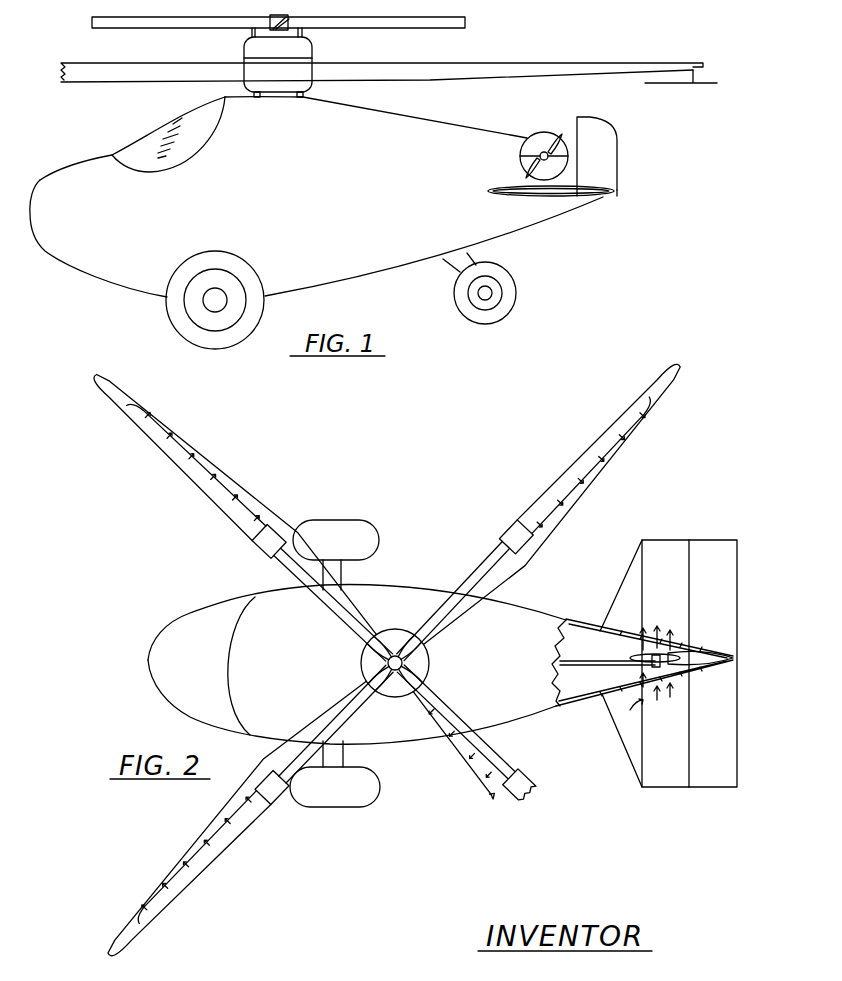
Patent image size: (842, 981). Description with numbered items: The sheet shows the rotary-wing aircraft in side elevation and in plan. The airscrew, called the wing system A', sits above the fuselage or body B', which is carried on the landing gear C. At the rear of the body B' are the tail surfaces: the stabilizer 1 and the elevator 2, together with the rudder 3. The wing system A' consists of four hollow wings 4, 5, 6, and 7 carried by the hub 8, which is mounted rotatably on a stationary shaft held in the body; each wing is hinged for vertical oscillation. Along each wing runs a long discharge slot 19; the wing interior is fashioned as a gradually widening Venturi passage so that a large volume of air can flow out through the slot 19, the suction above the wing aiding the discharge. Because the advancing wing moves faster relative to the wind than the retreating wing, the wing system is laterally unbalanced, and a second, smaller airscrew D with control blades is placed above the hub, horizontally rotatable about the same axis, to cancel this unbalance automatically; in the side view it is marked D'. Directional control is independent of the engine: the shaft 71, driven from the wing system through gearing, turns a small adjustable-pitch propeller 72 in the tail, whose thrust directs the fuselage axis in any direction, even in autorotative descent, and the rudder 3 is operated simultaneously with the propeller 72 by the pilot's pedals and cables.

In FIG. 1, the stabilizer 1 is at (545, 194).
In FIG. 2, the stabilizer 1 is at (663, 787).
In FIG. 1, the elevator 2 is at (587, 194).
In FIG. 2, the elevator 2 is at (718, 787).
In FIG. 1, the rudder 3 is at (605, 162).
In FIG. 2, the rudder 3 is at (712, 657).
In FIG. 2, the wing 4 is at (389, 652).
In FIG. 2, the wing 5 is at (237, 488).
In FIG. 1, the wing 6 is at (694, 76).
In FIG. 2, the wing 6 is at (183, 888).
In FIG. 2, the wing 7 is at (513, 763).
In FIG. 1, the hub 8 is at (303, 53).
In FIG. 2, the hub 8 is at (430, 661).
In FIG. 2, the discharge slot 19 is at (220, 835).
In FIG. 2, the shaft 71 is at (593, 660).
In FIG. 1, the propeller 72 is at (547, 147).
In FIG. 2, the propeller 72 is at (641, 640).
In FIG. 1, the wing system A' is at (382, 59).
In FIG. 2, the wing system A' is at (395, 614).
In FIG. 1, the fuselage B' is at (316, 197).
In FIG. 2, the fuselage B' is at (357, 664).
In FIG. 1, the landing gear C is at (178, 323).
In FIG. 2, the landing gear C is at (368, 795).
In FIG. 2, the airscrew D is at (487, 541).
In FIG. 1, the upper rotor blade D' is at (278, 33).